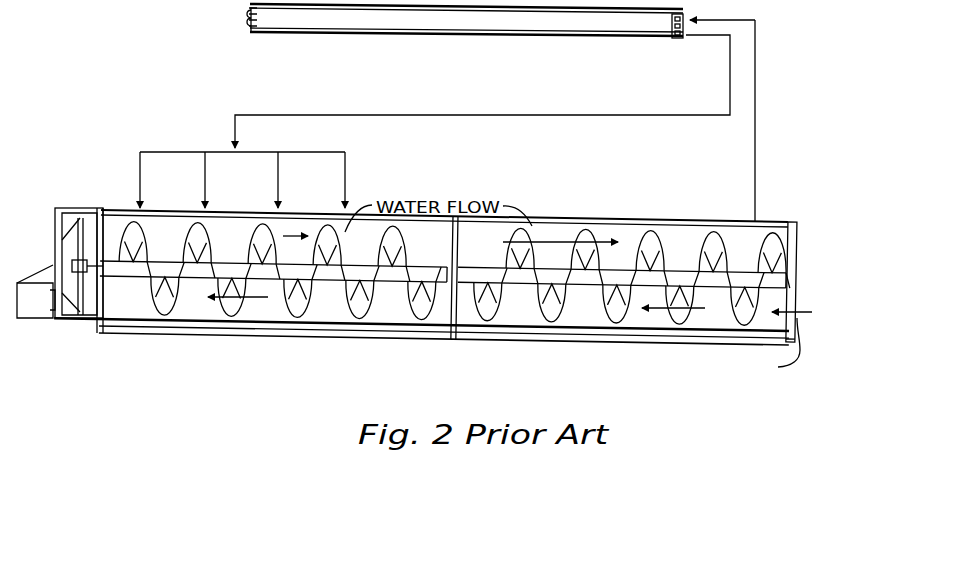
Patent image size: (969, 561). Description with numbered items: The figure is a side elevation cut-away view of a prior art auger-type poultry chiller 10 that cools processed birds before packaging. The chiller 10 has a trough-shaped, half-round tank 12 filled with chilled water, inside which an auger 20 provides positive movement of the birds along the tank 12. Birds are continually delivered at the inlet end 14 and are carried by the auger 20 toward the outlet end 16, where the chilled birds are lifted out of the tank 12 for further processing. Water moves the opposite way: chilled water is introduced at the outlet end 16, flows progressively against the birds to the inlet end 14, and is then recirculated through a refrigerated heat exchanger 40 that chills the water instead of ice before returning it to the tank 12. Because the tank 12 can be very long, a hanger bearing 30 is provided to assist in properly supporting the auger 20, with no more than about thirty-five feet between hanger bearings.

The poultry chiller 10 is at (137, 82).
The tank 12 is at (532, 244).
The inlet end 14 is at (800, 294).
The outlet end 16 is at (90, 203).
The auger 20 is at (340, 306).
The hanger bearing 30 is at (460, 292).
The refrigerated heat exchanger 40 is at (561, 36).